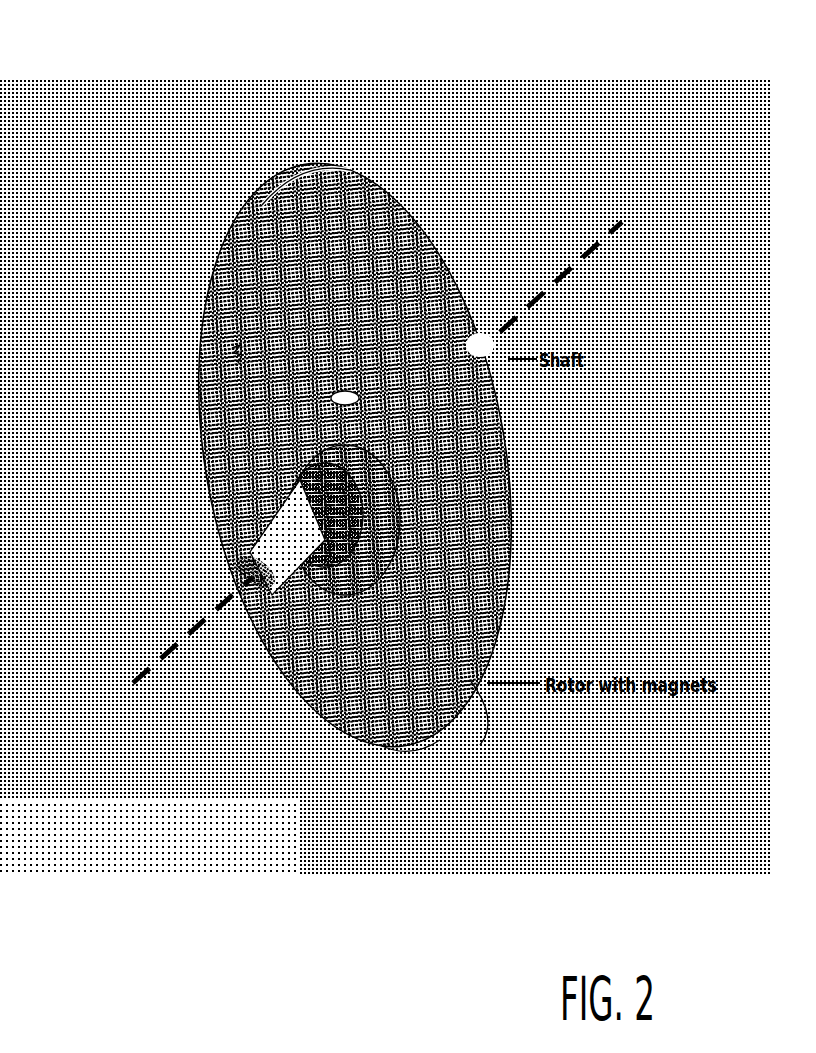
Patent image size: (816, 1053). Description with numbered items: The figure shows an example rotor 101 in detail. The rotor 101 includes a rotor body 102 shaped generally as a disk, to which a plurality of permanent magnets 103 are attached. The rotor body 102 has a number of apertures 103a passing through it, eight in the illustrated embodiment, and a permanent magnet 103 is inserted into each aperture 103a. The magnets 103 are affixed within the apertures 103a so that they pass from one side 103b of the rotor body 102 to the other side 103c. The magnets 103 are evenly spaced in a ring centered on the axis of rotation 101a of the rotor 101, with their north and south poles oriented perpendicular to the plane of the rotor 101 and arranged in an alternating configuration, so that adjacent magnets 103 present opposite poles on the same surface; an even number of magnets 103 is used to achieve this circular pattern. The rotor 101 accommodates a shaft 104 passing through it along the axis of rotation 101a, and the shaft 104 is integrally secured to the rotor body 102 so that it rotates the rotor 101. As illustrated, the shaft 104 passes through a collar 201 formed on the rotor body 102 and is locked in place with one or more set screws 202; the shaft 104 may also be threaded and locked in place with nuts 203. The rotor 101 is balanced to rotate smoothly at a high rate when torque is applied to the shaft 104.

The rotor 101 is at (205, 148).
The axis of rotation 101a is at (160, 657).
The rotor body 102 is at (255, 445).
The permanent magnets 103 is at (230, 355).
The apertures 103a is at (255, 218).
The one side of the rotor body 103b is at (398, 733).
The other side of the rotor body 103c is at (500, 722).
The shaft 104 is at (479, 335).
The collar 201 is at (388, 512).
The set screws 202 is at (342, 396).
The nuts 203 is at (343, 553).